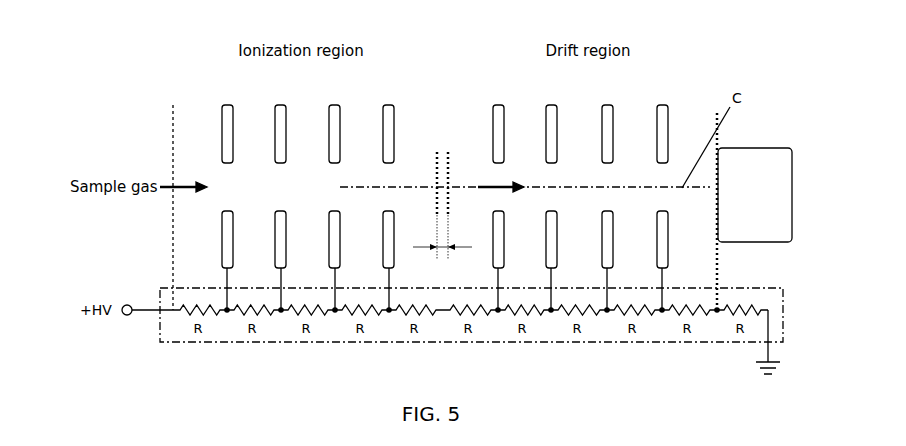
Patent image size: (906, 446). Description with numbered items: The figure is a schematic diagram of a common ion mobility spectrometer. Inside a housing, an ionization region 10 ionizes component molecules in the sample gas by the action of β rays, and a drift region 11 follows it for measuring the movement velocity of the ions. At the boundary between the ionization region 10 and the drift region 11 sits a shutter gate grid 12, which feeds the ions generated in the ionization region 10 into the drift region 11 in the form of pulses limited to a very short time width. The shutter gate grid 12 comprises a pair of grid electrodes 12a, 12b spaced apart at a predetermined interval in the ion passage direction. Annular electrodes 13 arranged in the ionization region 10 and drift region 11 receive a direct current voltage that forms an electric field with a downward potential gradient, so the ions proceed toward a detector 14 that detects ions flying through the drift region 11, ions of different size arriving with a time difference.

The ionization region 10 is at (175, 94).
The drift region 11 is at (715, 94).
The shutter gate grid 12 is at (423, 46).
The grid electrode 12a is at (437, 154).
The grid electrode 12b is at (448, 154).
The annular electrodes 13 is at (664, 106).
The detector 14 is at (767, 148).